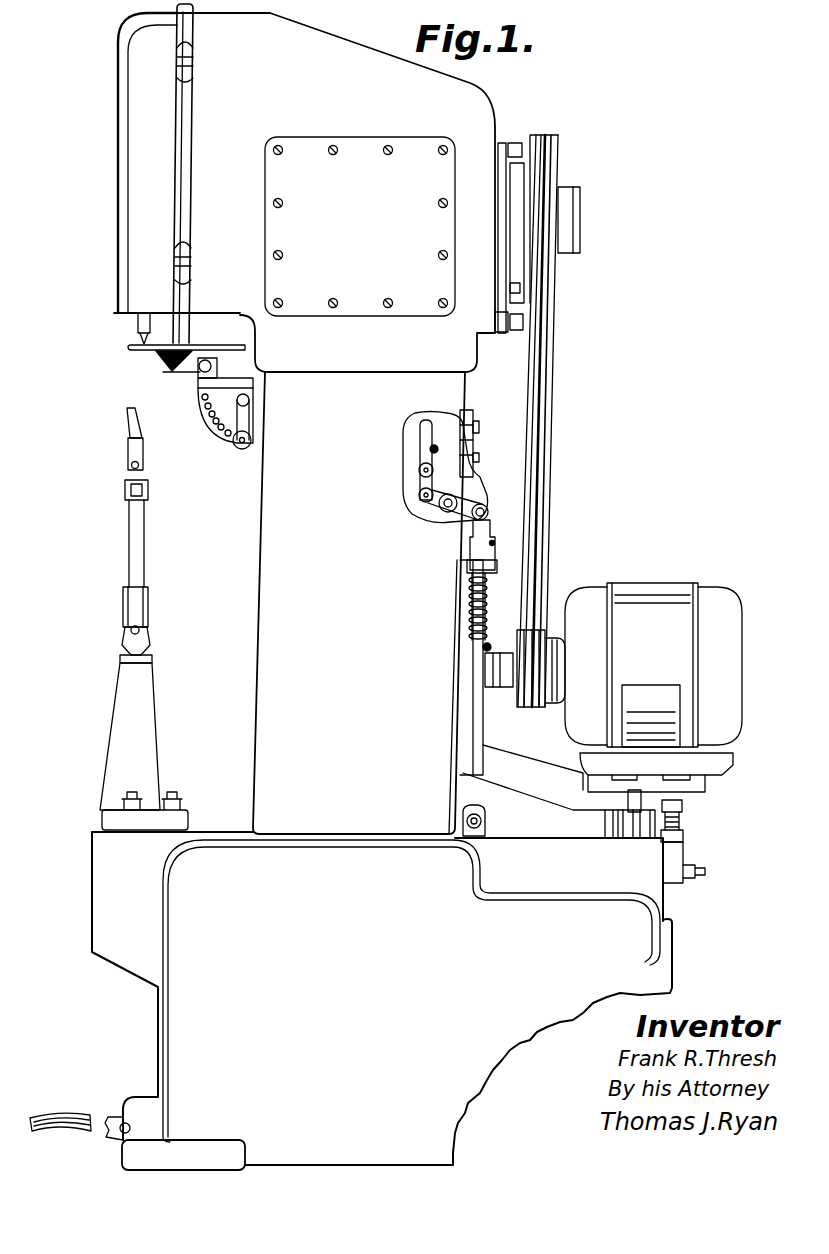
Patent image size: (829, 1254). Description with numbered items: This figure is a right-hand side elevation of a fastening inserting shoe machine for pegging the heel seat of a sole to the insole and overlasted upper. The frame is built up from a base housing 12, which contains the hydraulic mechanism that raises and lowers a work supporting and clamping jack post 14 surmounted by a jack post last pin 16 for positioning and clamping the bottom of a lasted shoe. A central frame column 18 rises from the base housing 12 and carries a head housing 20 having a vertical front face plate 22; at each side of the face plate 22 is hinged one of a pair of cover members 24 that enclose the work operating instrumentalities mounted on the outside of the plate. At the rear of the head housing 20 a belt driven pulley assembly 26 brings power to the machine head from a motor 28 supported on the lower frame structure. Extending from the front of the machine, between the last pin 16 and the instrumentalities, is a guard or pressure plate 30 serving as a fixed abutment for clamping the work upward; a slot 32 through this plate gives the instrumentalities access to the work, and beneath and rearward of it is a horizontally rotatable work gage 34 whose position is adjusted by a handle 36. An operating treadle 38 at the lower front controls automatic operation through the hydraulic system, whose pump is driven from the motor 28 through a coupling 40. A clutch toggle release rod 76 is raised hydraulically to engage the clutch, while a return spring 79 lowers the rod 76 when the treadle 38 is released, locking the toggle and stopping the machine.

The base housing 12 is at (348, 973).
The jack post 14 is at (149, 659).
The jack post last pin 16 is at (127, 427).
The central frame column 18 is at (356, 550).
The head housing 20 is at (352, 115).
The vertical front face plate 22 is at (193, 100).
The cover members 24 is at (166, 127).
The belt driven pulley assembly 26 is at (566, 195).
The motor 28 is at (658, 657).
The guard or pressure plate 30 is at (132, 347).
The slot 32 is at (150, 348).
The work gage 34 is at (161, 354).
The handle 36 is at (240, 443).
The operating treadle 38 is at (62, 1113).
The coupling 40 is at (490, 690).
The clutch toggle release rod 76 is at (410, 422).
The return spring 79 is at (470, 598).